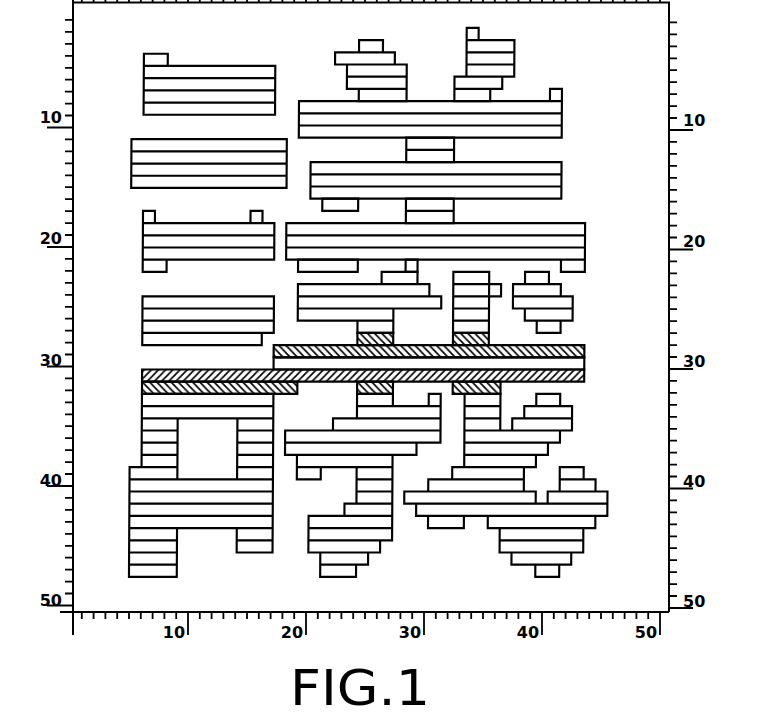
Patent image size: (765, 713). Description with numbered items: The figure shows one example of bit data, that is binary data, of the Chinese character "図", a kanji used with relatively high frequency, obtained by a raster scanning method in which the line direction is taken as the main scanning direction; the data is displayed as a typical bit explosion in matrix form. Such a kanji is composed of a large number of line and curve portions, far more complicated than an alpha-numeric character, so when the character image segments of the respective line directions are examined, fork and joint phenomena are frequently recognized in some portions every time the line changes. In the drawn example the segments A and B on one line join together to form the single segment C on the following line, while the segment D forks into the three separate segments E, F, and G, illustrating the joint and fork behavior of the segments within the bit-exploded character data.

The segment A is at (357, 340).
The segment B is at (484, 341).
The segment C is at (585, 349).
The segment D is at (585, 377).
The segment E is at (143, 386).
The segment F is at (357, 389).
The segment G is at (498, 388).